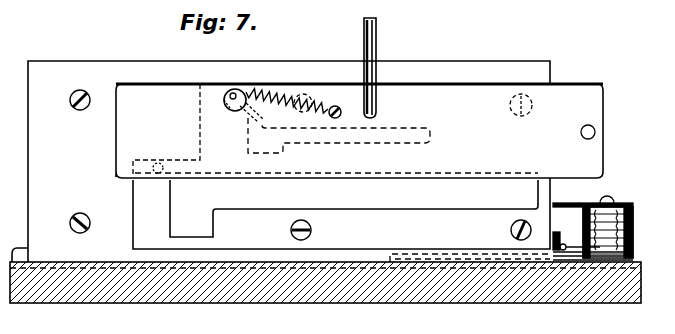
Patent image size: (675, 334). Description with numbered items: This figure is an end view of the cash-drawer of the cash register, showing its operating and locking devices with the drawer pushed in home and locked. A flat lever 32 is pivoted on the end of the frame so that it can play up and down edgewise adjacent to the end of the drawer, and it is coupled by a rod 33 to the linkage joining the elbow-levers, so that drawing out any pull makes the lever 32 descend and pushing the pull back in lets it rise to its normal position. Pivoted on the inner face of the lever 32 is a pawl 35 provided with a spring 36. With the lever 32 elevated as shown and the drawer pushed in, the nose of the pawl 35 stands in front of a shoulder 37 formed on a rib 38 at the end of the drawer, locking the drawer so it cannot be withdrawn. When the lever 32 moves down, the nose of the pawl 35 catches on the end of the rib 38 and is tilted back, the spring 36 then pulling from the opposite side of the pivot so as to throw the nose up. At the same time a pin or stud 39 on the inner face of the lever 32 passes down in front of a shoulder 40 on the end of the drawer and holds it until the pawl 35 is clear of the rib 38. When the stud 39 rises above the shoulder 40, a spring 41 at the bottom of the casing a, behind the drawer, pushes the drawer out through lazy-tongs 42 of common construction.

The flat lever 32 is at (359, 131).
The rod 33 is at (376, 38).
The pawl 35 is at (240, 112).
The spring 36 is at (293, 107).
The shoulder 37 is at (258, 122).
The rib 38 is at (339, 135).
The pin or stud 39 is at (166, 138).
The shoulder 40 is at (170, 209).
The spring 41 is at (634, 210).
The lazy-tongs 42 is at (583, 257).
The casing a is at (397, 303).